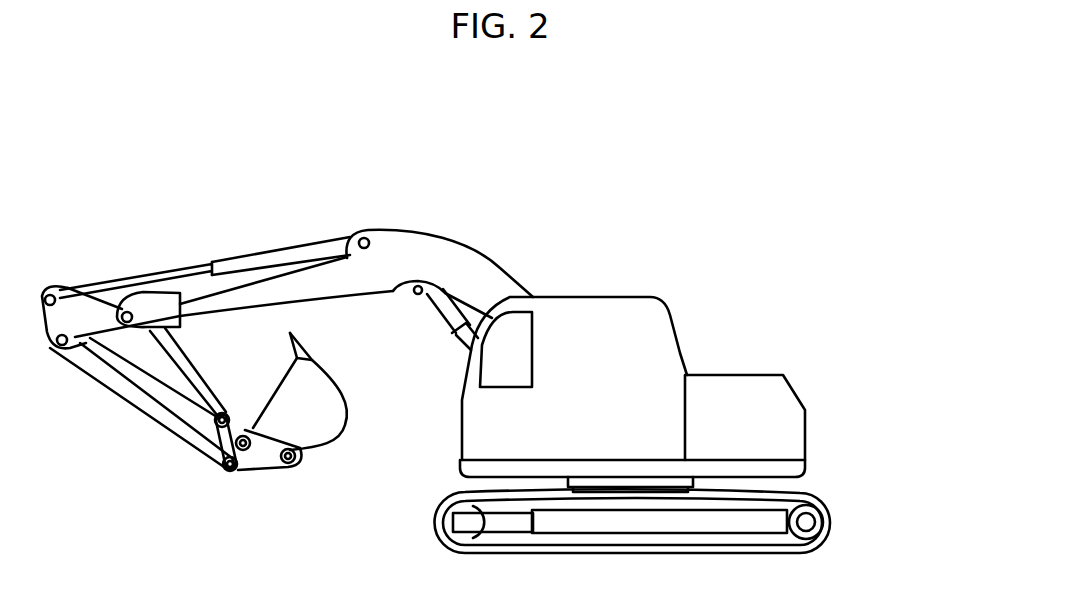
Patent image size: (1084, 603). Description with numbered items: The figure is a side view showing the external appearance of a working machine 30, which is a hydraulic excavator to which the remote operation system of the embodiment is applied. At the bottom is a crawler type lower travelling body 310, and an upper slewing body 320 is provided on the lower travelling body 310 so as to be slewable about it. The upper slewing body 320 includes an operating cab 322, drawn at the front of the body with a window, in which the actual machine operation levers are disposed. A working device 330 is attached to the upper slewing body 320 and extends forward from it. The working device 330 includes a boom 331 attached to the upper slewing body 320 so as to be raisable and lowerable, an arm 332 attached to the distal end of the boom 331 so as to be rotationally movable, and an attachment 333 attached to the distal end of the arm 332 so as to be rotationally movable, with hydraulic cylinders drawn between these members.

The working machine 30 is at (812, 213).
The lower travelling body 310 is at (861, 508).
The upper slewing body 320 is at (852, 420).
The operating cab 322 is at (628, 301).
The working device 330 is at (160, 198).
The boom 331 is at (478, 270).
The arm 332 is at (167, 362).
The attachment 333 is at (327, 418).